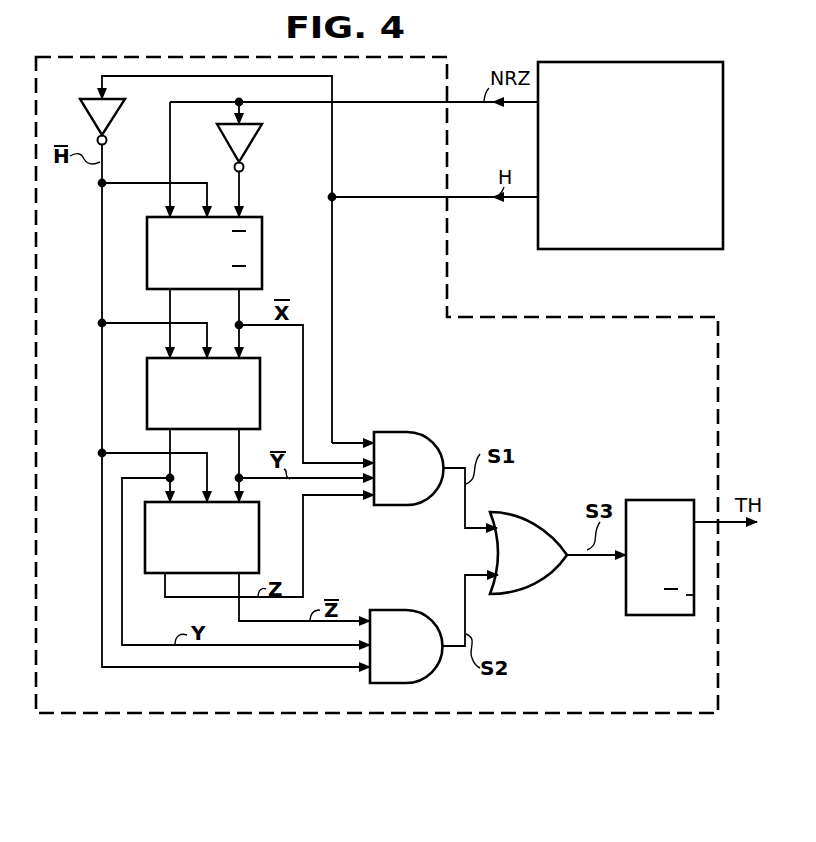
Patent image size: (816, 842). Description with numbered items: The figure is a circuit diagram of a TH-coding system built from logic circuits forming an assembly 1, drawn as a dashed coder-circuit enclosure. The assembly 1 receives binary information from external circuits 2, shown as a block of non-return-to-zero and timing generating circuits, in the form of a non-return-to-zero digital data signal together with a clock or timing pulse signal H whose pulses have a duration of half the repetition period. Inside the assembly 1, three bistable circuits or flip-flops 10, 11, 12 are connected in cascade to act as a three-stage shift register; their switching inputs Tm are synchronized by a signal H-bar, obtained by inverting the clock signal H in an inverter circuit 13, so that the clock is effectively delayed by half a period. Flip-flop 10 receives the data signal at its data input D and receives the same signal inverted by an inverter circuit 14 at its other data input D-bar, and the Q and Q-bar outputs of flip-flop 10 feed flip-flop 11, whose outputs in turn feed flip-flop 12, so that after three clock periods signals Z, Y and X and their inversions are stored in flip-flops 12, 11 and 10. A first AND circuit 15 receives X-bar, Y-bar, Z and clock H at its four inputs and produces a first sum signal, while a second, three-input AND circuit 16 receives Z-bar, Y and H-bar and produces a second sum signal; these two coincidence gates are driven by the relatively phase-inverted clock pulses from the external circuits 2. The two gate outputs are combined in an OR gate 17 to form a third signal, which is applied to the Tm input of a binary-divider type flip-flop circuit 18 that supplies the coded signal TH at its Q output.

The logic assembly 1 is at (142, 57).
The external circuits 2 is at (668, 70).
The flip-flop 10 is at (263, 251).
The flip-flop 11 is at (260, 406).
The flip-flop 12 is at (260, 522).
The inverter circuit 13 is at (114, 122).
The inverter circuit 14 is at (254, 145).
The first AND circuit 15 is at (410, 432).
The second AND circuit 16 is at (409, 610).
The OR gate 17 is at (525, 522).
The binary-divider flip-flop circuit 18 is at (668, 500).